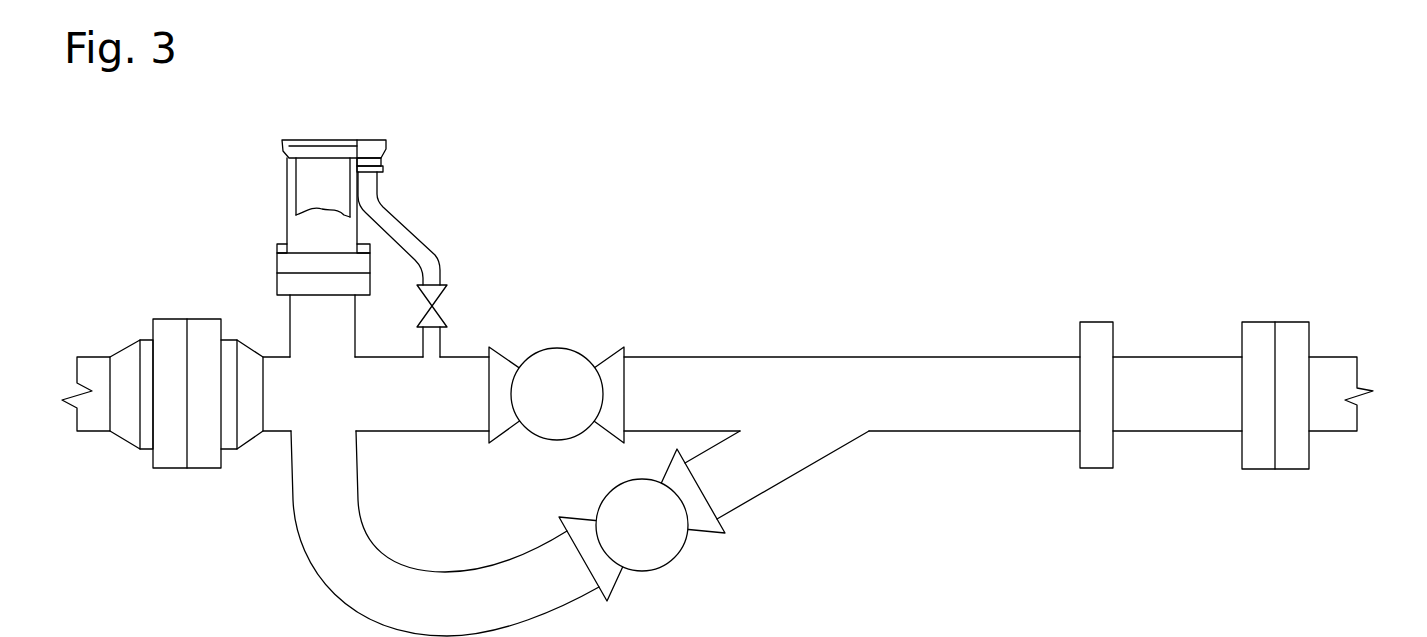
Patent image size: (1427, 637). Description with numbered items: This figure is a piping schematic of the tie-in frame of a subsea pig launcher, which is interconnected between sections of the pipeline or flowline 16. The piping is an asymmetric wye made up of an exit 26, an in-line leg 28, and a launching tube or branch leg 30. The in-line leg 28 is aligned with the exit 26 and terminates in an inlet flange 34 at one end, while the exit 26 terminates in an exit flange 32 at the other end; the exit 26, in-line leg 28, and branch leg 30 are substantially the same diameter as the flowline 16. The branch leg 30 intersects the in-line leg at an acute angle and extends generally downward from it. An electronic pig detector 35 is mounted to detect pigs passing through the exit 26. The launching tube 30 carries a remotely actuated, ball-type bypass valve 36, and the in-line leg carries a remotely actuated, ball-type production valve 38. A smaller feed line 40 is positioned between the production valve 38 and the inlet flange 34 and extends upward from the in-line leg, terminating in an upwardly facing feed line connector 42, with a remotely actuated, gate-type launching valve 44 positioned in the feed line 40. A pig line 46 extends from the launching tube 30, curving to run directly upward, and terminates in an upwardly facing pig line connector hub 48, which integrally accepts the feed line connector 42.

The flowline 16 is at (100, 353).
The exit 26 is at (963, 372).
The in-line leg 28 is at (410, 405).
The branch leg 30 is at (795, 457).
The exit flange 32 is at (1291, 330).
The inlet flange 34 is at (200, 320).
The electronic pig detector 35 is at (1098, 330).
The bypass valve 36 is at (668, 563).
The production valve 38 is at (572, 348).
The feed line 40 is at (455, 341).
The feed line connector 42 is at (380, 173).
The launching valve 44 is at (453, 296).
The pig line 46 is at (353, 573).
The pig line connector hub 48 is at (333, 140).